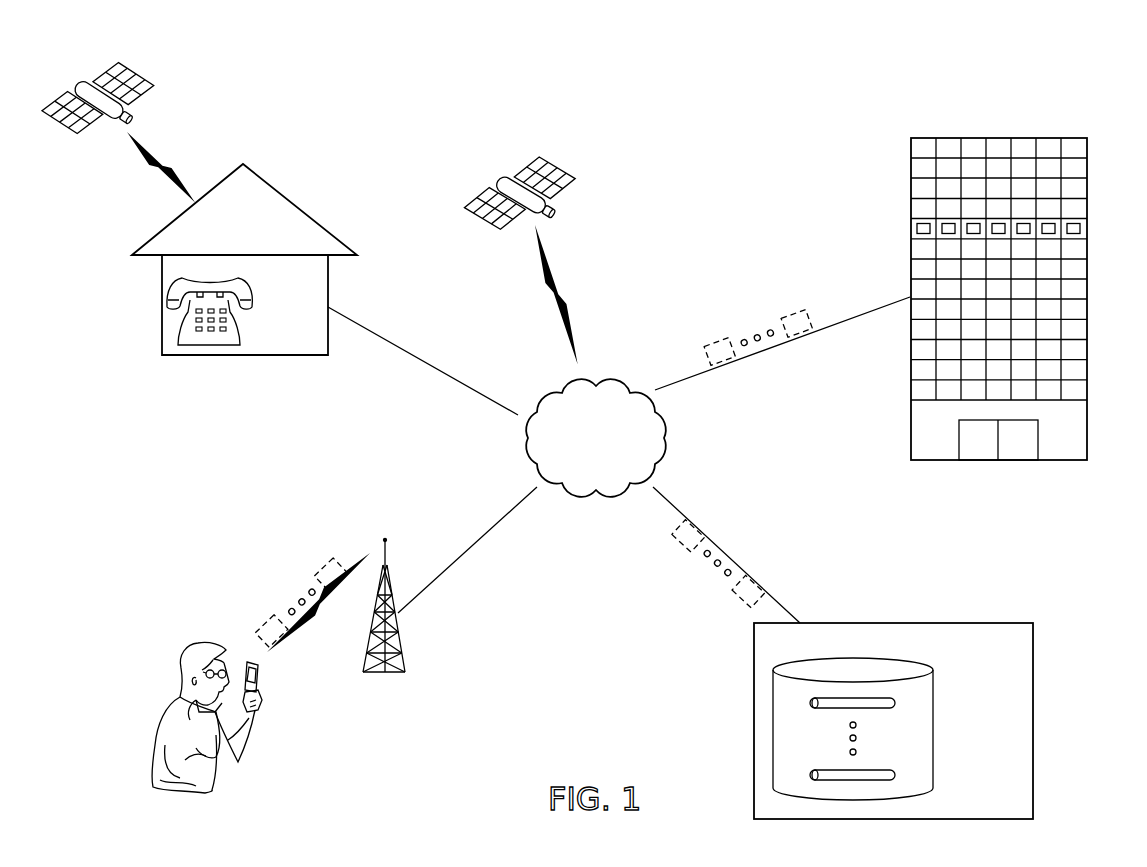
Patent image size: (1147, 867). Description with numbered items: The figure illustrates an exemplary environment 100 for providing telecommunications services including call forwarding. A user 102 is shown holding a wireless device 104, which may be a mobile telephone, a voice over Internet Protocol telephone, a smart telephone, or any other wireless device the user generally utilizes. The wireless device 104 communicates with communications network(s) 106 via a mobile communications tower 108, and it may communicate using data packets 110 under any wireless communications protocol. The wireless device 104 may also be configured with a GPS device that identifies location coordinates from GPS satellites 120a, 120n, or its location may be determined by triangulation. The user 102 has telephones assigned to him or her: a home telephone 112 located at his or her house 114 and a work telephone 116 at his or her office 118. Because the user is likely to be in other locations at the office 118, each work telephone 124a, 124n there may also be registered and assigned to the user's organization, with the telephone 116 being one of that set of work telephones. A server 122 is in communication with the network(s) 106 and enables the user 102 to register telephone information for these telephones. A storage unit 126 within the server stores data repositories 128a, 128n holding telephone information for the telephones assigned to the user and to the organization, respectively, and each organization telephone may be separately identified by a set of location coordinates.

The communication system 100 is at (672, 140).
The user 102 is at (157, 743).
The wireless device 104 is at (260, 678).
The communications network(s) 106 is at (617, 502).
The mobile communications tower 108 is at (397, 678).
The data packets 110 is at (708, 347).
The home telephone 112 is at (253, 287).
The house 114 is at (302, 210).
The work telephone 116 is at (950, 237).
The office 118 is at (1047, 135).
The GPS satellite 120a is at (78, 87).
The GPS satellite 120n is at (498, 177).
The server 122 is at (932, 721).
The work telephone 124a is at (922, 218).
The work telephone 124n is at (1073, 218).
The storage unit 126 is at (892, 729).
The data repository 128a is at (828, 710).
The data repository 128n is at (877, 768).